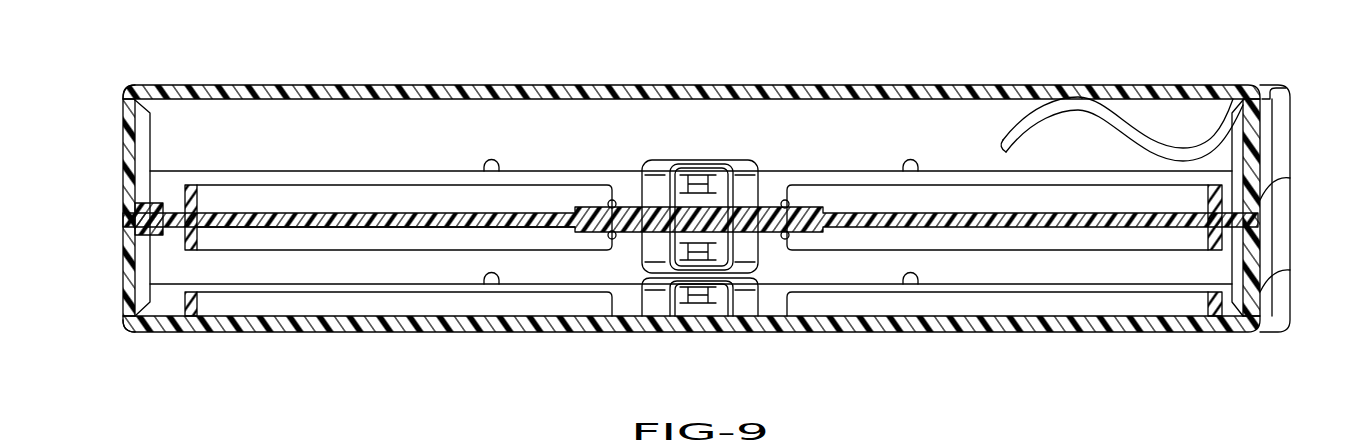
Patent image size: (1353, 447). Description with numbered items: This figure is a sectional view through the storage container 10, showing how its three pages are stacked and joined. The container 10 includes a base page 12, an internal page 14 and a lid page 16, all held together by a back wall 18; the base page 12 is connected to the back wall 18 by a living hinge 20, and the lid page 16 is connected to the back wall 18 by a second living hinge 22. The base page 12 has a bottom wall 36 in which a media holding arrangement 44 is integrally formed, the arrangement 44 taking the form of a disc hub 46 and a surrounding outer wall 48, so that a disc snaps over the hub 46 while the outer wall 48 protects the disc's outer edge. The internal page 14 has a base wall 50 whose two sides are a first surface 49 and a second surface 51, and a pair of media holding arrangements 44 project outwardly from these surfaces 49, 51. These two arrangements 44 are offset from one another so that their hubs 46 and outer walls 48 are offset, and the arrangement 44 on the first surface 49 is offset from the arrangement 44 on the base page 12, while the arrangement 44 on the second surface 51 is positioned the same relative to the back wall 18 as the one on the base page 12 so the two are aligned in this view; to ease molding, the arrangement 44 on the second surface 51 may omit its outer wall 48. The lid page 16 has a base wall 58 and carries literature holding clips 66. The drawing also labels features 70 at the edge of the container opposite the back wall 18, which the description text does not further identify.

The storage container 10 is at (705, 212).
The base page 12 is at (1254, 230).
The internal page 14 is at (238, 283).
The lid page 16 is at (665, 212).
The back wall 18 is at (122, 180).
The living hinge 20 is at (134, 322).
The second living hinge 22 is at (124, 86).
The bottom wall 36 is at (303, 333).
The media holding arrangement 44 is at (558, 246).
The hub 46 is at (660, 297).
The outer wall 48 is at (703, 217).
The first surface 49 is at (388, 229).
The base wall 50 is at (690, 202).
The second surface 51 is at (359, 212).
The base wall 58 is at (366, 85).
The literature holding clips 66 is at (1086, 110).
The ribs 70 is at (1283, 104).